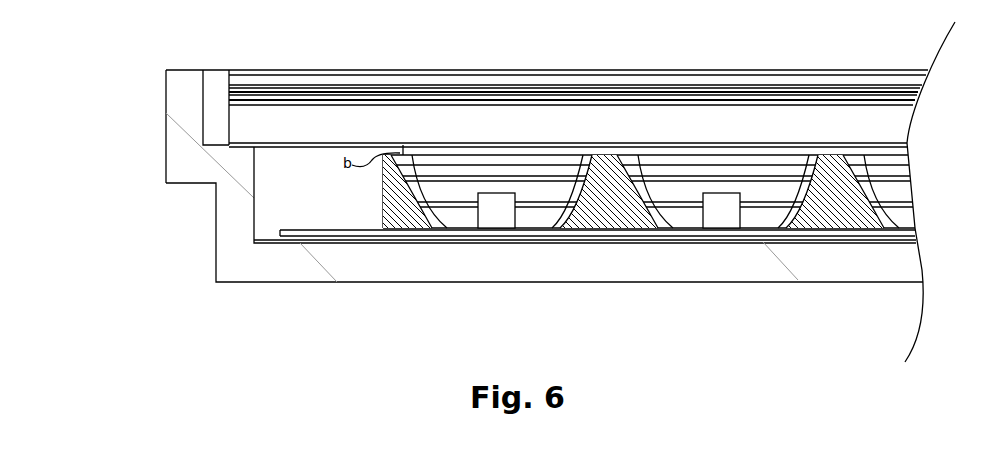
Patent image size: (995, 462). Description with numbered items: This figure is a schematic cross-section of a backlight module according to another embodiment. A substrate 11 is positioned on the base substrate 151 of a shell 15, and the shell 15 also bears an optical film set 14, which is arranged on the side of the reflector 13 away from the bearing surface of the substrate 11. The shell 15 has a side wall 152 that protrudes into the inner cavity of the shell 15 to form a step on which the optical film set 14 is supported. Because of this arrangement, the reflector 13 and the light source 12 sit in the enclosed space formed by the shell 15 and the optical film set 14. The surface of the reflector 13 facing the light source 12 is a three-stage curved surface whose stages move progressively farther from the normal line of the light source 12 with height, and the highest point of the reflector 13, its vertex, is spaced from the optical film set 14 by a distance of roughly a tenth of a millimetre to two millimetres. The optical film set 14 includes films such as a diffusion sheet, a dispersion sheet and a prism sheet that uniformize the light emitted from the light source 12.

The substrate 11 is at (397, 233).
The light source 12 is at (483, 222).
The reflector 13 is at (650, 210).
The optical film set 14 is at (227, 115).
The shell 15 is at (212, 247).
The base substrate 151 is at (348, 262).
The side wall 152 is at (190, 162).